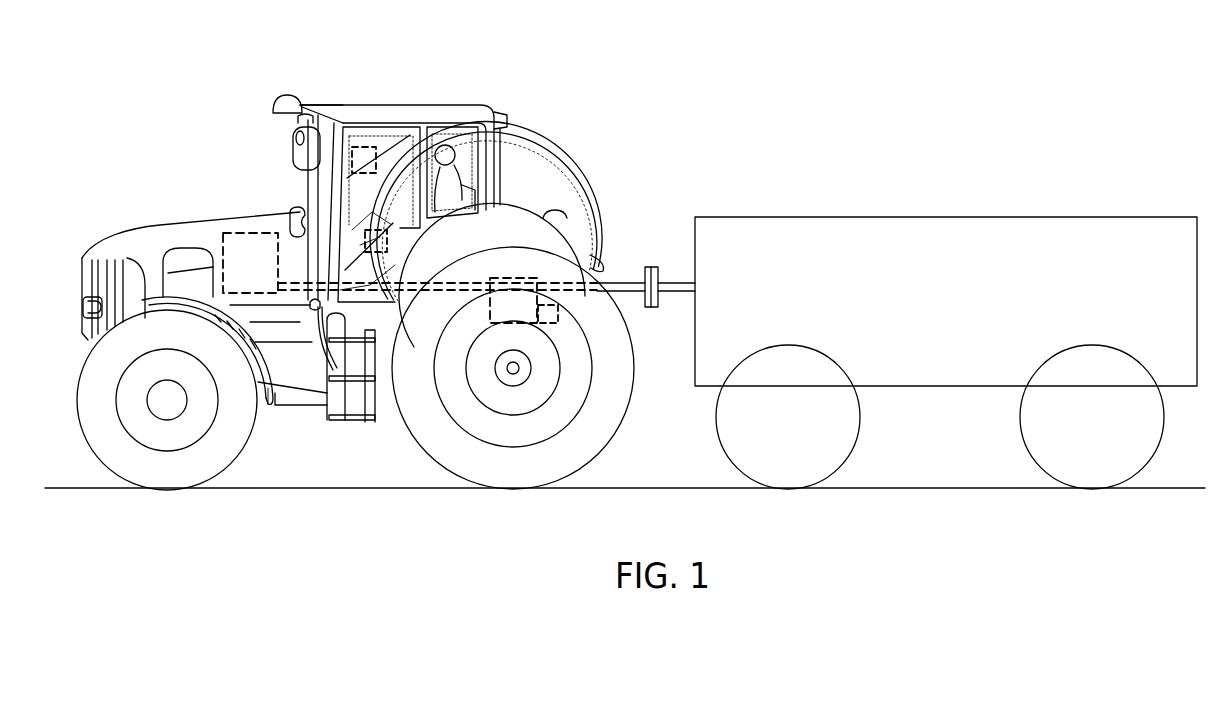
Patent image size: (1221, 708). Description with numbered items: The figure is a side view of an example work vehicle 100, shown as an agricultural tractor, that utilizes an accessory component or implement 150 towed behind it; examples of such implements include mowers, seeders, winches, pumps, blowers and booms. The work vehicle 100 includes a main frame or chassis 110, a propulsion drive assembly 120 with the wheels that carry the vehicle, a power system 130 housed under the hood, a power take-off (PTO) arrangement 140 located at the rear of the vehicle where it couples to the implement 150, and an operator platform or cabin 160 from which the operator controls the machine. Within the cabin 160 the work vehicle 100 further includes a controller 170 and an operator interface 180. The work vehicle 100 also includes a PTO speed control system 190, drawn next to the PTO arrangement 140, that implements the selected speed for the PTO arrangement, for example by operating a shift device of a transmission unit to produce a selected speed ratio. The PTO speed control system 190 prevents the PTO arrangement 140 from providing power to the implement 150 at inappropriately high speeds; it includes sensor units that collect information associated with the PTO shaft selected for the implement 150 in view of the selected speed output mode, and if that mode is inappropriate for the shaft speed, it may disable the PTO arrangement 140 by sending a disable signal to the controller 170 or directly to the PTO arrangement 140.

The work vehicle 100 is at (482, 76).
The main frame or chassis 110 is at (263, 388).
The propulsion drive assembly 120 is at (160, 405).
The power system 130 is at (250, 233).
The power take-off (PTO) arrangement 140 is at (528, 278).
The implement 150 is at (778, 217).
The operator platform or cabin 160 is at (382, 123).
The controller 170 is at (377, 235).
The operator interface 180 is at (375, 150).
The PTO speed control system 190 is at (560, 312).